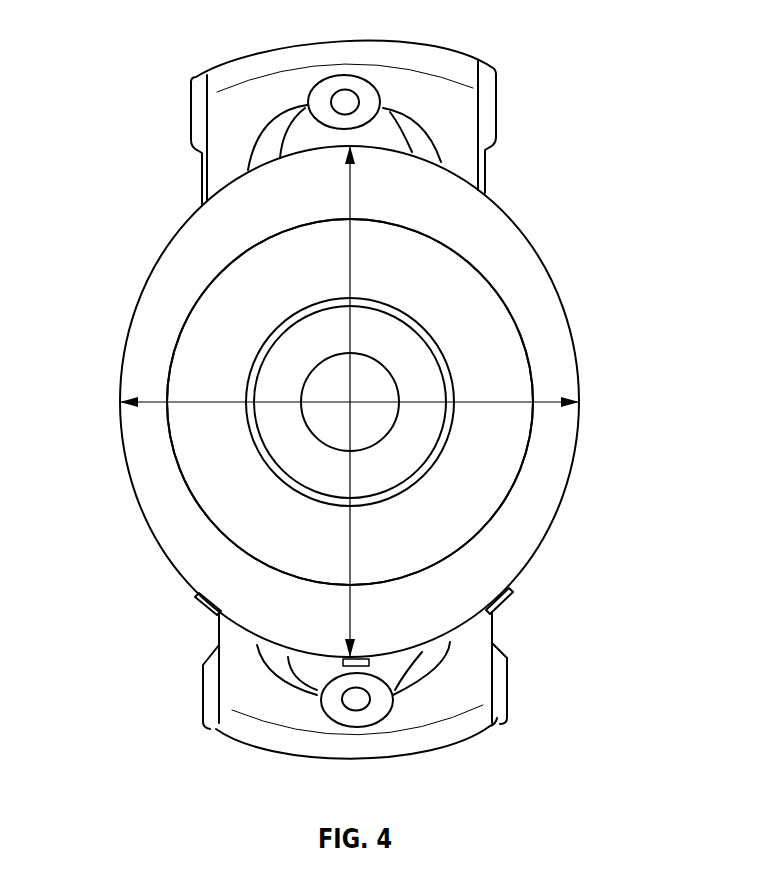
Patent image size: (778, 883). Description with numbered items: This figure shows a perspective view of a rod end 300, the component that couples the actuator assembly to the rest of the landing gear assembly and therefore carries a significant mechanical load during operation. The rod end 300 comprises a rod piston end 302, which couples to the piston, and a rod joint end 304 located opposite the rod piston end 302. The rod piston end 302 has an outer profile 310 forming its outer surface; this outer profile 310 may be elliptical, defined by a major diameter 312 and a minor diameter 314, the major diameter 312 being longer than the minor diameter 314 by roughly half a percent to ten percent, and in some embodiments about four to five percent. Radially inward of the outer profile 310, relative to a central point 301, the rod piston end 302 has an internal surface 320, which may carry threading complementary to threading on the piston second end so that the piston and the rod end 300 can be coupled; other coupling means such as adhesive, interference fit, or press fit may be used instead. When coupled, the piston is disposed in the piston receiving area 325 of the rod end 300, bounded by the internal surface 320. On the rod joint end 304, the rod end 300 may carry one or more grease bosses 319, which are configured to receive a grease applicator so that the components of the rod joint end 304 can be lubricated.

The rod end 300 is at (359, 392).
The point 301 is at (350, 402).
The rod piston end 302 is at (596, 433).
The rod joint end 304 is at (188, 679).
The outer profile 310 is at (206, 206).
The major diameter 312 is at (350, 283).
The minor diameter 314 is at (223, 403).
The grease boss 319 is at (386, 114).
The internal surface 320 is at (532, 378).
The piston receiving area 325 is at (477, 508).